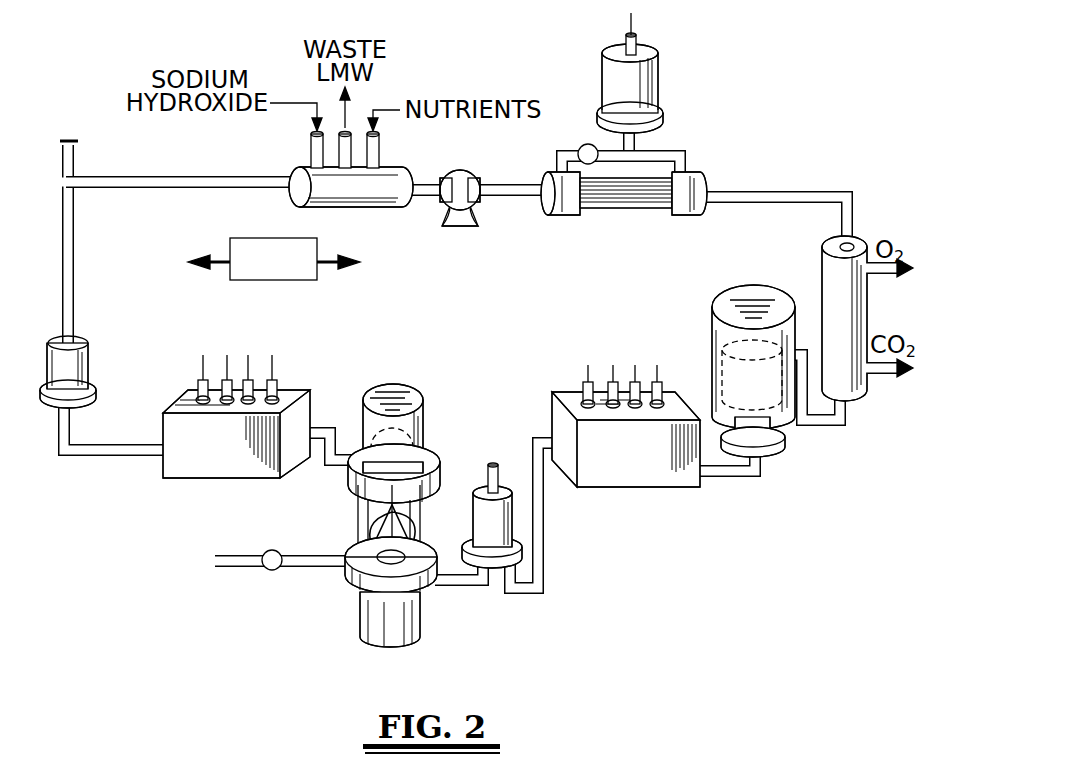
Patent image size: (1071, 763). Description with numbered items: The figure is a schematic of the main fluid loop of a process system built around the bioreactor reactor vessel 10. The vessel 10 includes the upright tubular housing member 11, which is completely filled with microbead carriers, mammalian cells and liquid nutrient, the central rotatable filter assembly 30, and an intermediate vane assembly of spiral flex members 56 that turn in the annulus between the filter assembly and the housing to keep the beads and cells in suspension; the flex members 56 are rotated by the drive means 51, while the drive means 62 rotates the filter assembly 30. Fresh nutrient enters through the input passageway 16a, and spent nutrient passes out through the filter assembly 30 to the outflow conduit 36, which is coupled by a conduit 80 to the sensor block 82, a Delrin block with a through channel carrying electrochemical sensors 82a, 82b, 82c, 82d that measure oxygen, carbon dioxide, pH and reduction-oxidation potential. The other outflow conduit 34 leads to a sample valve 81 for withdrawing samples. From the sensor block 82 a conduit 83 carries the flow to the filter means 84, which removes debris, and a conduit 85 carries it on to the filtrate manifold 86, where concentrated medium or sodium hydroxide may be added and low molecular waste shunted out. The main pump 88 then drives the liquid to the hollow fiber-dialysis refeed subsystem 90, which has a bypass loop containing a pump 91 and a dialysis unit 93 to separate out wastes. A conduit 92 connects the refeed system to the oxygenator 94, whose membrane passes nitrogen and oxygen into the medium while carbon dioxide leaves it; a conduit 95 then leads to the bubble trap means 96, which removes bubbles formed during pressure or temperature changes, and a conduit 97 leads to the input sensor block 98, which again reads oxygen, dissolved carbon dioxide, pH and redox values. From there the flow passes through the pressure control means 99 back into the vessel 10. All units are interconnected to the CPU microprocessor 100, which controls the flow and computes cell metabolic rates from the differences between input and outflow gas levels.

The reactor vessel 10 is at (382, 518).
The upright tubular housing member 11 is at (356, 523).
The input passageway 16a is at (487, 590).
The central rotatable filter assembly 30 is at (392, 560).
The outflow conduit 34 is at (320, 572).
The outflow conduit 36 is at (343, 452).
The drive means 51 is at (424, 623).
The spiral flex members 56 is at (494, 464).
The drive means 62 is at (415, 402).
The conduit 80 is at (322, 428).
The sample valve 81 is at (268, 570).
The sensor block 82 is at (188, 482).
The electrochemical sensor 82a is at (278, 382).
The electrochemical sensor 82b is at (257, 382).
The electrochemical sensor 82c is at (224, 382).
The electrochemical sensor 82d is at (199, 382).
The conduit 83 is at (102, 456).
The filter means 84 is at (88, 358).
The conduit 85 is at (178, 176).
The filtrate manifold 86 is at (395, 206).
The main pump 88 is at (466, 198).
The hollow fiber-dialysis refeed subsystem 90 is at (703, 178).
The pump 91 is at (583, 146).
The conduit 92 is at (792, 191).
The dialysis unit 93 is at (655, 82).
The gas exchange module (oxygenator) 94 is at (860, 240).
The conduit 95 is at (836, 422).
The bubble trap means 96 is at (750, 290).
The conduit 97 is at (742, 478).
The input sensor block 98 is at (660, 488).
The pressure control means 99 is at (538, 493).
The CPU microprocessor 100 is at (262, 238).